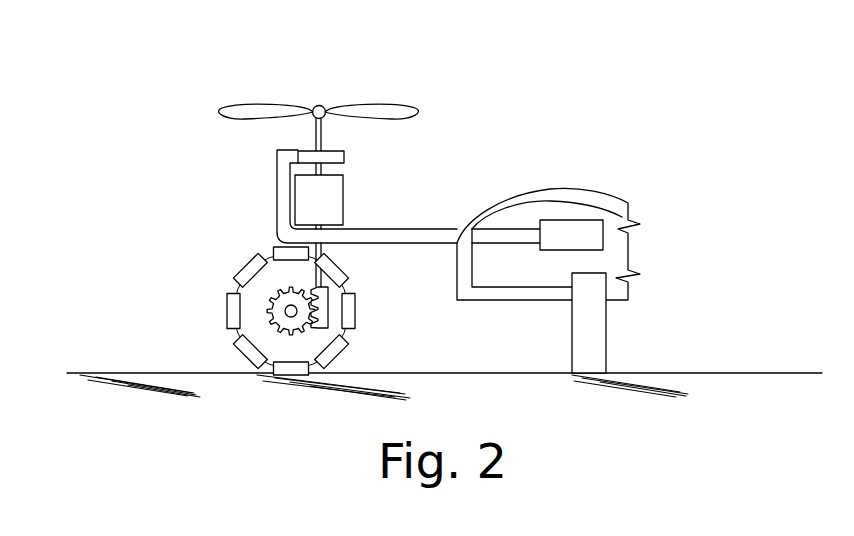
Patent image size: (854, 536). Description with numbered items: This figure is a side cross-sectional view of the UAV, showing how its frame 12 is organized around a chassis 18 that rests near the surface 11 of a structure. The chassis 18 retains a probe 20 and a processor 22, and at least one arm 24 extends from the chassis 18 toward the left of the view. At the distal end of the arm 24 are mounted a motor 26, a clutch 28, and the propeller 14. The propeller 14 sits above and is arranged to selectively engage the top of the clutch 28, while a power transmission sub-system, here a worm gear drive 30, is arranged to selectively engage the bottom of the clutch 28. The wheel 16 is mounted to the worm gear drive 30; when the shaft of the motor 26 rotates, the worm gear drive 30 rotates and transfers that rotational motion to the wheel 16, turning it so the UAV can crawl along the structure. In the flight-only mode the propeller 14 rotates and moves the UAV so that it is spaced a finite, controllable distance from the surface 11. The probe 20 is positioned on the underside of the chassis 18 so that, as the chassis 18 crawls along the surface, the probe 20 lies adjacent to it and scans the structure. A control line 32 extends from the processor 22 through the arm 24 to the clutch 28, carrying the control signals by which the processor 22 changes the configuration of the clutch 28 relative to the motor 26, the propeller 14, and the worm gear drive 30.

The surface 11 is at (98, 372).
The frame 12 is at (557, 148).
The propeller 14 is at (268, 105).
The wheel 16 is at (227, 311).
The chassis 18 is at (600, 193).
The probe 20 is at (607, 322).
The processor 22 is at (603, 235).
The arm 24 is at (408, 229).
The motor 26 is at (295, 204).
The clutch 28 is at (298, 157).
The worm gear drive 30 is at (330, 308).
The control line 32 is at (498, 242).